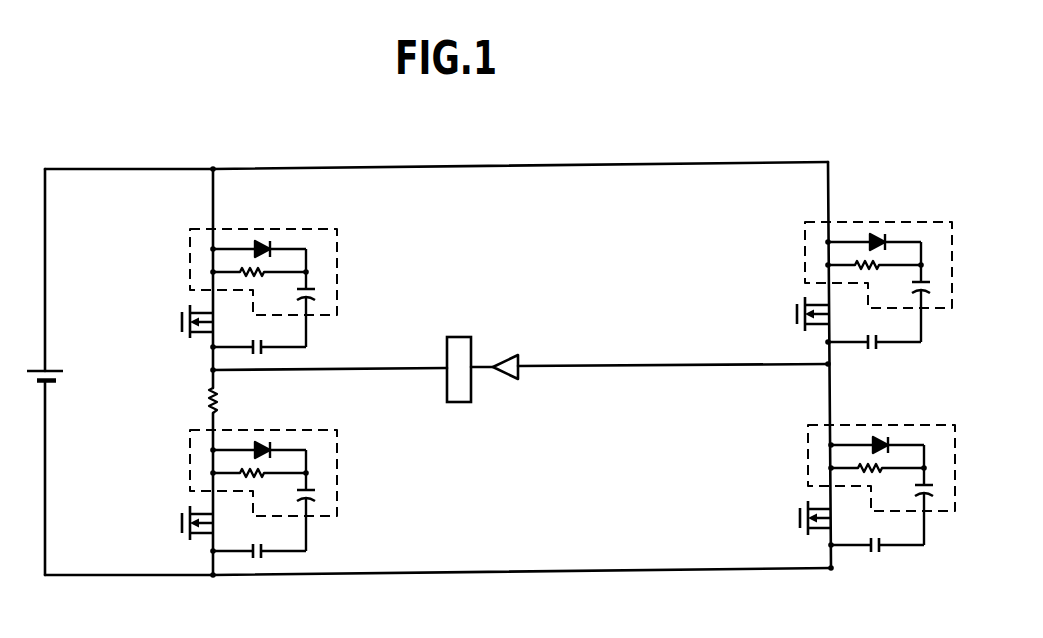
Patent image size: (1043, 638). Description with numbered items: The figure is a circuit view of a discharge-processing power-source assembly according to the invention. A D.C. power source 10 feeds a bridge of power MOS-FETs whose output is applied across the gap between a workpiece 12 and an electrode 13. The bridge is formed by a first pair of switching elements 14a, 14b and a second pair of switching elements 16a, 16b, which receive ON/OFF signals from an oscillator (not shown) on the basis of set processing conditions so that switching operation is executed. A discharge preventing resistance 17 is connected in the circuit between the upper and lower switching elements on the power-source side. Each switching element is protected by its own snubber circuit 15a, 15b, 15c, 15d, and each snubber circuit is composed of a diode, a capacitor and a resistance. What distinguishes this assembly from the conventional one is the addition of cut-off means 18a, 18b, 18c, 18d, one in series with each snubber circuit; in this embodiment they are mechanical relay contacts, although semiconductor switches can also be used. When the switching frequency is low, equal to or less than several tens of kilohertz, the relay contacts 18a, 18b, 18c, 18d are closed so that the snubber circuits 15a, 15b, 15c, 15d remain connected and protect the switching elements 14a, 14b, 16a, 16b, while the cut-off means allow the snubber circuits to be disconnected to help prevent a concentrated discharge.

The D.C. power source 10 is at (57, 363).
The workpiece 12 is at (455, 333).
The electrode 13 is at (513, 352).
The switching element 14a is at (178, 314).
The switching element 14b is at (792, 516).
The snubber circuit 15a is at (334, 249).
The snubber circuit 15b is at (338, 462).
The snubber circuit 15c is at (953, 236).
The snubber circuit 15d is at (957, 455).
The switching element 16a is at (790, 314).
The switching element 16b is at (178, 524).
The discharge preventing resistance 17 is at (222, 405).
The cut-off means 18a is at (262, 352).
The cut-off means 18b is at (262, 556).
The cut-off means 18c is at (885, 348).
The cut-off means 18d is at (890, 552).